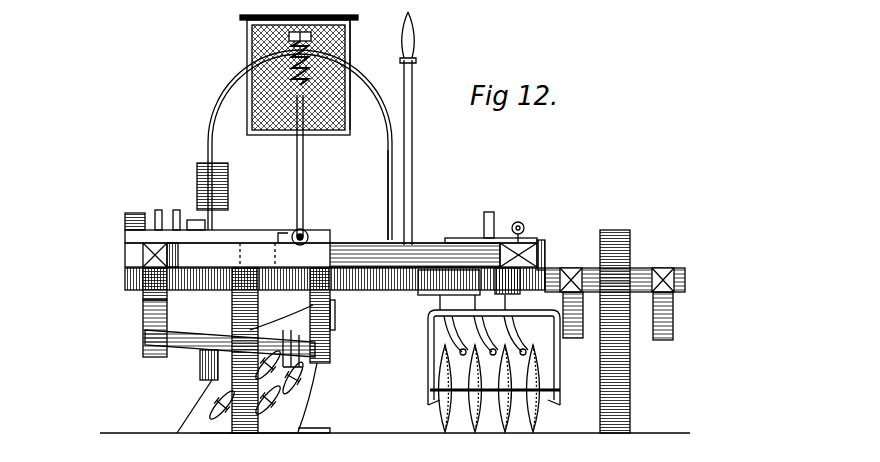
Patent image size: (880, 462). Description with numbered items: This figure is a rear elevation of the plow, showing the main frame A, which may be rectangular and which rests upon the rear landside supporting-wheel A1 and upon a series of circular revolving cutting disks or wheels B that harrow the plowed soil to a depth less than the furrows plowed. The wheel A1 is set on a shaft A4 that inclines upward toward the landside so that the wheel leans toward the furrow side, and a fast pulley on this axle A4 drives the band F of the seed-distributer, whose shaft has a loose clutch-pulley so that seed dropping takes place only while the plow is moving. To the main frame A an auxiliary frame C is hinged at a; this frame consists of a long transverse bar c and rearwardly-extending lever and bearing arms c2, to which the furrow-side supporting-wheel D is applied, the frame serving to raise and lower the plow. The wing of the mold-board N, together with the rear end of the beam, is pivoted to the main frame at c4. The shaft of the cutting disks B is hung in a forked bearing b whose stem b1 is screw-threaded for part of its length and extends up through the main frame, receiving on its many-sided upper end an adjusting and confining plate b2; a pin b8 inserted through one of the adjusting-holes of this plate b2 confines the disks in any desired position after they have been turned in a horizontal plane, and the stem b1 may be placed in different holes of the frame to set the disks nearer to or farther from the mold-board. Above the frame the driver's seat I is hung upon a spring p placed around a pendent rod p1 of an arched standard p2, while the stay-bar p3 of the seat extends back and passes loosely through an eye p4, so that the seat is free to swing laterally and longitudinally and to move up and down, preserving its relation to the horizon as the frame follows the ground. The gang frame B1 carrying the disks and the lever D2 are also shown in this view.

The main frame A is at (323, 255).
The rear landside supporting-wheel A1 is at (253, 350).
The shaft of rear supporting-wheel A4 is at (229, 340).
The circular revolving cutting disks B is at (495, 388).
The gang frame B1 is at (560, 390).
The forked bearing b is at (492, 339).
The stem of forked bearing b1 is at (495, 215).
The adjusting and confining plate b2 is at (491, 229).
The pin b8 is at (527, 225).
The auxiliary frame C is at (615, 270).
The transverse bar c is at (418, 290).
The rearwardly-extending lever and bearing arms c2 is at (626, 316).
The pivot of beam and mold-board wing c4 is at (336, 318).
The furrow-side supporting-wheel D is at (624, 331).
The lever D2 is at (418, 128).
The band F is at (281, 315).
The mold-board N is at (256, 385).
The driver's seat I is at (353, 83).
The spring p is at (247, 57).
The pendent rod p1 is at (346, 57).
The arched standard p2 is at (380, 195).
The stay-bar p3 is at (312, 166).
The eye p4 is at (306, 232).
The hinge of auxiliary frame a is at (520, 292).